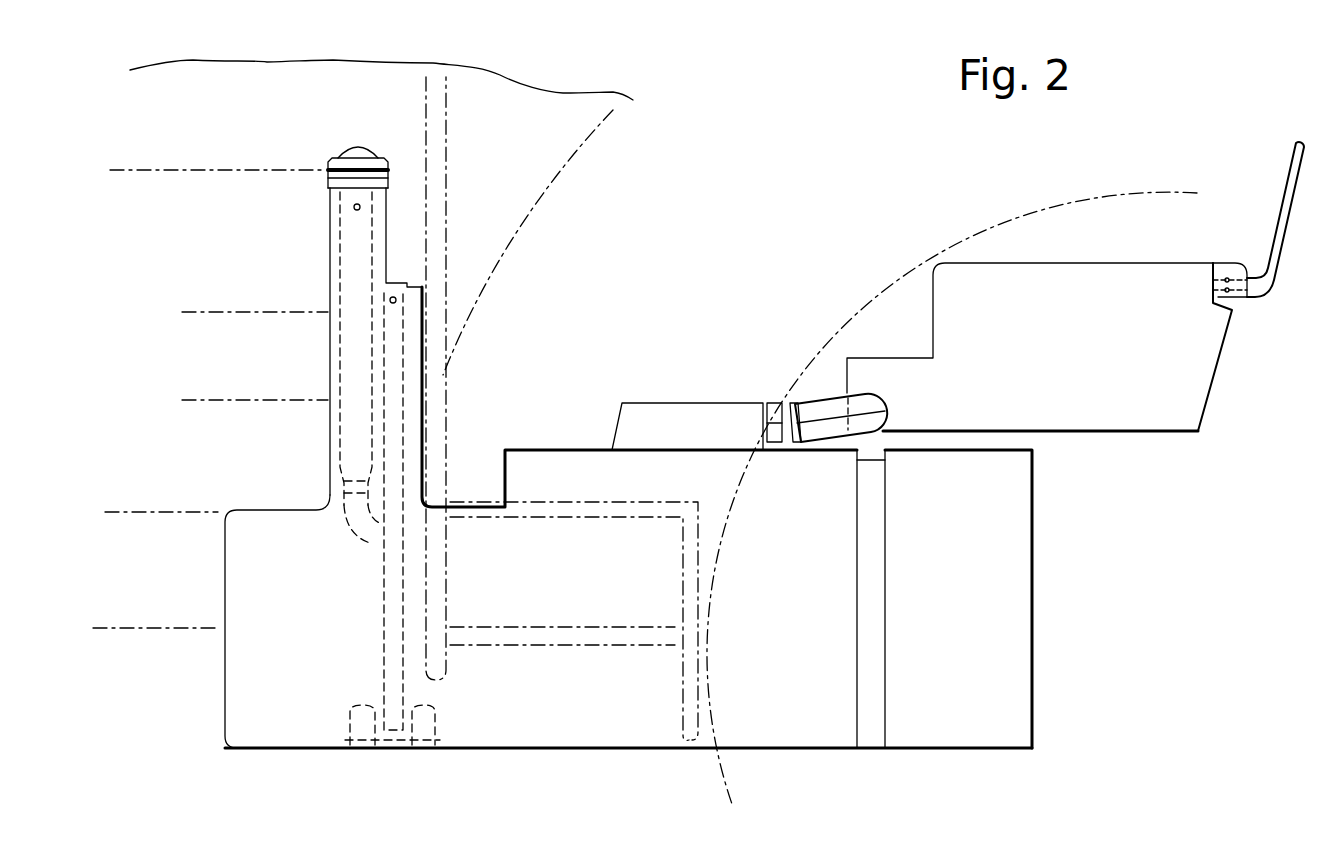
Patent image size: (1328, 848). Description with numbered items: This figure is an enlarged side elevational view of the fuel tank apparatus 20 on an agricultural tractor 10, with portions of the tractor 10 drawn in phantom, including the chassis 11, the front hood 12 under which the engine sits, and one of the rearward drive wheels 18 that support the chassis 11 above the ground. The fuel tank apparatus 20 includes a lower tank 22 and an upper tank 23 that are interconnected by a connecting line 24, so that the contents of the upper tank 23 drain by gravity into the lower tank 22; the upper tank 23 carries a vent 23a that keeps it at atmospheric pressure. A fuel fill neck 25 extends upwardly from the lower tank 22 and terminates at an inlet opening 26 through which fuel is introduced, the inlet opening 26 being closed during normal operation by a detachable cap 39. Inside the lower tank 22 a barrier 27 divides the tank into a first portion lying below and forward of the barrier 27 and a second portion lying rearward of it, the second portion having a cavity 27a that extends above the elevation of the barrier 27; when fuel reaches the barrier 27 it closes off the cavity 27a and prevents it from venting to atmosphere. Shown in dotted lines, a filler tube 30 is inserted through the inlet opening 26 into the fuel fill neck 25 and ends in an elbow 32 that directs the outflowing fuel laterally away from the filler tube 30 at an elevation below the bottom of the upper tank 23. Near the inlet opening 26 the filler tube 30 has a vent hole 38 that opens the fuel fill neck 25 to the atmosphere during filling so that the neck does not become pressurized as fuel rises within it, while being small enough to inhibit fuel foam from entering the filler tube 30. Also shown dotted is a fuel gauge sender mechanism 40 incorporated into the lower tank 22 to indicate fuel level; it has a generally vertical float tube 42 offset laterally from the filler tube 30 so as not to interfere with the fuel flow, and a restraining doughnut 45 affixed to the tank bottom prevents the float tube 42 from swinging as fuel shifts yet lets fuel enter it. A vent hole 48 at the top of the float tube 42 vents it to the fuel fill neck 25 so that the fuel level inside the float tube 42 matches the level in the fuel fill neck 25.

The tractor 10 is at (735, 142).
The chassis 11 is at (190, 612).
The front hood 12 is at (222, 77).
The rearward drive wheels 18 is at (970, 240).
The fuel tank apparatus 20 is at (1100, 553).
The lower tank 22 is at (257, 723).
The upper tank 23 is at (1173, 420).
The vent 23a is at (1287, 183).
The connecting line 24 is at (820, 405).
The fuel fill neck 25 is at (330, 228).
The inlet opening 26 is at (326, 147).
The barrier 27 is at (483, 510).
The cavity 27a is at (548, 472).
The filler tube 30 is at (330, 278).
The elbow 32 is at (347, 530).
The vent hole 38 is at (354, 207).
The detachable cap 39 is at (367, 148).
The fuel gauge sender mechanism 40 is at (349, 666).
The float tube 42 is at (407, 387).
The restraining doughnut 45 is at (435, 725).
The vent hole 48 is at (397, 302).